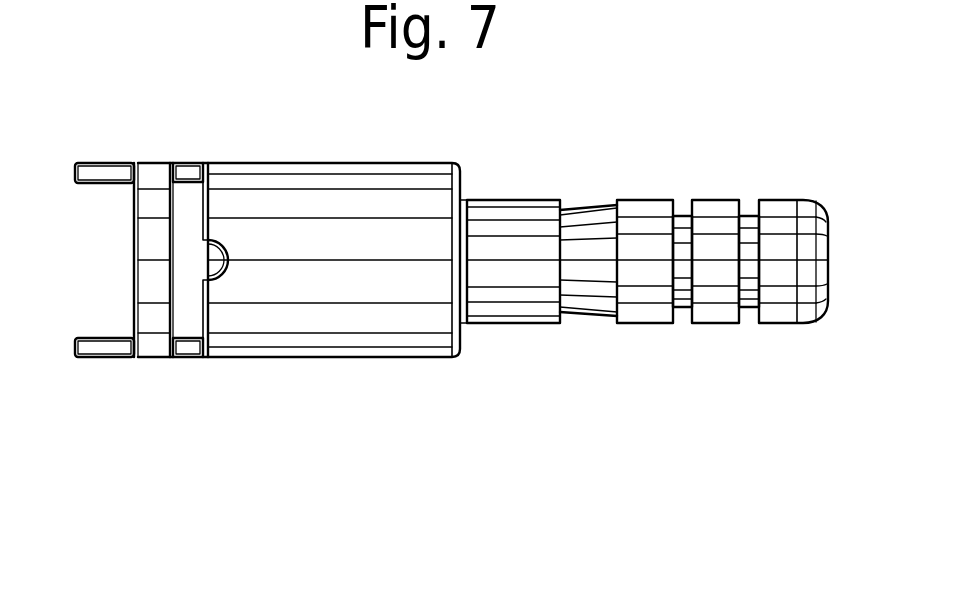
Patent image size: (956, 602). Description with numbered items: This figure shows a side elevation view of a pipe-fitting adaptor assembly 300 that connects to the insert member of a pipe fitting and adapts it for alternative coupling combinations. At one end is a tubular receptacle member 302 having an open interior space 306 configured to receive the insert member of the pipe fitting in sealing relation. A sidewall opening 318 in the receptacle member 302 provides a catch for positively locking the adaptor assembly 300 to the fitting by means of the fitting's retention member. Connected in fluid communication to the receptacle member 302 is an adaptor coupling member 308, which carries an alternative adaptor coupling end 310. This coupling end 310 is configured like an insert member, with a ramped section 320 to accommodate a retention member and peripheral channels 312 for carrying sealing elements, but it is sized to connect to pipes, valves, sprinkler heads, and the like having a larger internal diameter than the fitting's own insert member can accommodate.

The pipe-fitting adaptor assembly 300 is at (205, 128).
The tubular receptacle member 302 is at (286, 193).
The open interior space 306 is at (197, 207).
The adaptor coupling member 308 is at (524, 199).
The adaptor coupling end 310 is at (783, 199).
The peripheral channels 312 is at (757, 323).
The sidewall opening 318 is at (172, 322).
The ramped section 320 is at (587, 210).